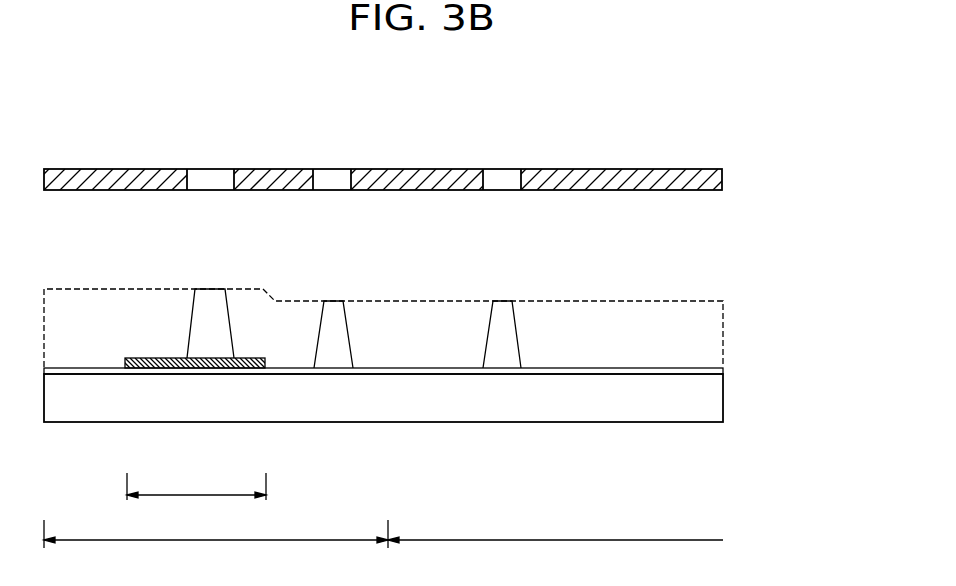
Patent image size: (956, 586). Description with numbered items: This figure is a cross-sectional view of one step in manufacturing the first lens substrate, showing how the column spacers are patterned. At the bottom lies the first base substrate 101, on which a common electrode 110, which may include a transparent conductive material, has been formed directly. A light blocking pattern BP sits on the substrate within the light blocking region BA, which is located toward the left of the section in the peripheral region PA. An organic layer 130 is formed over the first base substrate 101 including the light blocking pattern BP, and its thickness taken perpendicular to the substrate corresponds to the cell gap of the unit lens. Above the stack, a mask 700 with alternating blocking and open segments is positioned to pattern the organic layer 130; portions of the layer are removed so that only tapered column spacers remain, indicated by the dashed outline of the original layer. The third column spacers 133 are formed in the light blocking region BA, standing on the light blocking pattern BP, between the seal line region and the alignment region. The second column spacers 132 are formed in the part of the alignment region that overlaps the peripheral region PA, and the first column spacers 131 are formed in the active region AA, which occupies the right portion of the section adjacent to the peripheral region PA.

The mask 700 is at (722, 178).
The organic layer 130 is at (718, 330).
The third column spacers 133 is at (210, 297).
The second column spacers 132 is at (332, 310).
The first column spacers 131 is at (500, 310).
The light blocking pattern BP is at (168, 368).
The common electrode 110 is at (718, 370).
The first base substrate 101 is at (718, 404).
The light blocking region BA is at (196, 496).
The peripheral region PA is at (216, 546).
The active region AA is at (555, 553).